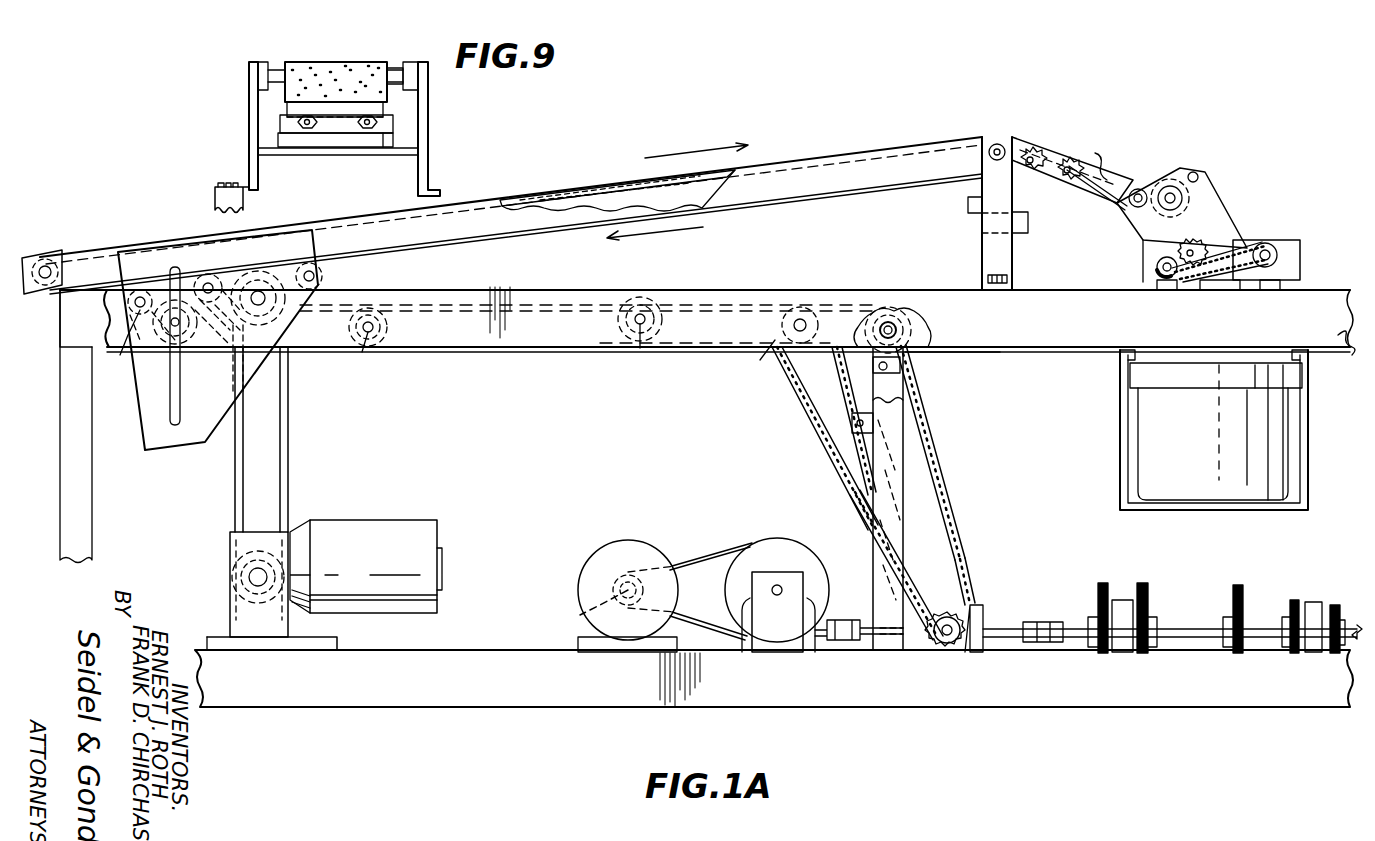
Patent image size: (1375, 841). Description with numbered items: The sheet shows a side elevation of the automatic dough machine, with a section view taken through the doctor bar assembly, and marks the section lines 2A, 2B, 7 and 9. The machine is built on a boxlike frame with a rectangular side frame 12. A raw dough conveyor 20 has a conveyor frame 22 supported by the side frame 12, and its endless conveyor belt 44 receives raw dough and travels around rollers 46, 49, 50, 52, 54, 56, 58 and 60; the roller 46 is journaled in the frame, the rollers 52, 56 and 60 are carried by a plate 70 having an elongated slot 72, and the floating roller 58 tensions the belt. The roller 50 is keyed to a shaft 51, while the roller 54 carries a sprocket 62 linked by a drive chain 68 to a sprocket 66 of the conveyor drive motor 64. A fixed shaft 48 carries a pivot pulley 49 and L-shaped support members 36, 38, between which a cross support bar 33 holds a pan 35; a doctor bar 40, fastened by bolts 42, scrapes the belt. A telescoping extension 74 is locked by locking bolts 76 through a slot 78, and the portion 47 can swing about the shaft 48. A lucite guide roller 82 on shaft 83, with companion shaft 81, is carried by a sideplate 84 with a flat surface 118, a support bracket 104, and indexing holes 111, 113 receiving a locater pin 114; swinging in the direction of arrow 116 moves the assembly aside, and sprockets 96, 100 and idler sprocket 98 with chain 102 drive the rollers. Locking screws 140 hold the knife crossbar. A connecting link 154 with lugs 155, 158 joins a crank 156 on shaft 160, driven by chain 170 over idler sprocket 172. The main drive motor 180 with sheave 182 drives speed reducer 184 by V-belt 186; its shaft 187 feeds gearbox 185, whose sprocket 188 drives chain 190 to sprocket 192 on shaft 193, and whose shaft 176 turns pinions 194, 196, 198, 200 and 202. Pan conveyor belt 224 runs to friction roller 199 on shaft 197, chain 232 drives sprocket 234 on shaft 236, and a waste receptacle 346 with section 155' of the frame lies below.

In FIG. 9, the side frame 12 is at (214, 185).
In FIG. 1A, the side frame 12 is at (930, 694).
In FIG. 1A, the raw dough conveyor 20 is at (690, 100).
In FIG. 1A, the conveyor frame 22 is at (820, 170).
In FIG. 9, the cross support bar 33 is at (370, 145).
In FIG. 1A, the cross support bar 33 is at (990, 237).
In FIG. 9, the pan 35 is at (383, 148).
In FIG. 1A, the pan 35 is at (982, 228).
In FIG. 9, the L-shaped support member 36 is at (250, 112).
In FIG. 1A, the L-shaped support member 36 is at (1014, 258).
In FIG. 9, the L-shaped support member 38 is at (400, 104).
In FIG. 9, the doctor bar 40 is at (378, 106).
In FIG. 1A, the doctor bar 40 is at (962, 174).
In FIG. 9, the bolts 42 is at (300, 120).
In FIG. 1A, the bolts 42 is at (968, 205).
In FIG. 9, the endless conveyor belt 44 is at (315, 62).
In FIG. 1A, the endless conveyor belt 44 is at (553, 165).
In FIG. 1A, the roller 46 is at (62, 258).
In FIG. 1A, the portion of dough conveyor 47 is at (1062, 144).
In FIG. 9, the fixed shaft 48 is at (394, 72).
In FIG. 1A, the fixed shaft 48 is at (996, 142).
In FIG. 9, the pivot pulley 49 is at (372, 64).
In FIG. 1A, the driven roller 50 is at (1172, 184).
In FIG. 1A, the shaft 51 is at (1168, 185).
In FIG. 1A, the roller 52 is at (322, 277).
In FIG. 1A, the roller 54 is at (280, 258).
In FIG. 1A, the roller 56 is at (222, 270).
In FIG. 1A, the floating roller 58 is at (200, 338).
In FIG. 1A, the roller 60 is at (128, 338).
In FIG. 1A, the sprocket 62 is at (188, 330).
In FIG. 1A, the conveyor drive motor 64 is at (372, 524).
In FIG. 1A, the sprocket 66 is at (275, 575).
In FIG. 1A, the drive chain 68 is at (288, 408).
In FIG. 1A, the plate 70 is at (152, 432).
In FIG. 1A, the elongated slot 72 is at (196, 406).
In FIG. 1A, the conveyor frame extension 74 is at (1140, 176).
In FIG. 1A, the locking bolts 76 is at (1036, 170).
In FIG. 1A, the slot 78 is at (1070, 180).
In FIG. 1A, the shaft 81 is at (1182, 200).
In FIG. 1A, the guide roller 82 is at (1252, 242).
In FIG. 1A, the shaft 83 is at (1280, 240).
In FIG. 1A, the sideplate 84 is at (1290, 252).
In FIG. 1A, the sprocket 96 is at (1200, 245).
In FIG. 1A, the idler sprocket 98 is at (1154, 269).
In FIG. 1A, the sprocket 100 is at (1300, 262).
In FIG. 1A, the chain 102 is at (1210, 262).
In FIG. 1A, the support bracket 104 is at (1230, 290).
In FIG. 1A, the indexing hole 111 is at (1120, 212).
In FIG. 1A, the indexing hole 113 is at (1200, 175).
In FIG. 1A, the locater pin 114 is at (1142, 208).
In FIG. 1A, the arrow 116 is at (1250, 122).
In FIG. 1A, the flat surface 118 is at (1102, 160).
In FIG. 1A, the locking screws 140 is at (1162, 285).
In FIG. 1A, the connecting link 154 is at (968, 360).
In FIG. 1A, the projecting lug 155 is at (1072, 378).
In FIG. 1A, the table section 155' is at (1341, 354).
In FIG. 1A, the crank 156 is at (900, 340).
In FIG. 1A, the projecting lug 158 is at (905, 400).
In FIG. 1A, the shaft 160 is at (890, 339).
In FIG. 1A, the chain 170 is at (956, 513).
In FIG. 1A, the idler sprocket 172 is at (850, 418).
In FIG. 1A, the shaft 176 is at (1080, 632).
In FIG. 1A, the main drive motor 180 is at (650, 520).
In FIG. 1A, the V-belt variable pitch sheave 182 is at (560, 608).
In FIG. 1A, the speed reducer 184 is at (770, 575).
In FIG. 1A, the gearbox 185 is at (983, 605).
In FIG. 1A, the endless V-belt 186 is at (710, 553).
In FIG. 1A, the shaft 187 is at (826, 652).
In FIG. 1A, the sprocket 188 is at (951, 643).
In FIG. 1A, the endless chain 190 is at (825, 435).
In FIG. 1A, the sprocket 192 is at (760, 360).
In FIG. 1A, the shaft 193 is at (806, 318).
In FIG. 1A, the pinion 194 is at (1103, 582).
In FIG. 1A, the pinion 196 is at (1142, 582).
In FIG. 1A, the shaft 197 is at (362, 352).
In FIG. 1A, the pinion 198 is at (1237, 584).
In FIG. 1A, the friction roller 199 is at (388, 330).
In FIG. 1A, the pinion 200 is at (1293, 598).
In FIG. 1A, the pinion 202 is at (1332, 605).
In FIG. 1A, the intermediate pan conveyor belt 224 is at (545, 305).
In FIG. 1A, the endless chain 232 is at (712, 306).
In FIG. 1A, the sprocket 234 is at (650, 312).
In FIG. 1A, the shaft 236 is at (640, 348).
In FIG. 1A, the waste receptacle 346 is at (1155, 430).
In FIG. 1A, the section line 2A is at (39, 256).
In FIG. 1A, the section line 2B is at (912, 270).
In FIG. 1A, the section line 7 is at (1170, 147).
In FIG. 1A, the section line 9 is at (1017, 93).